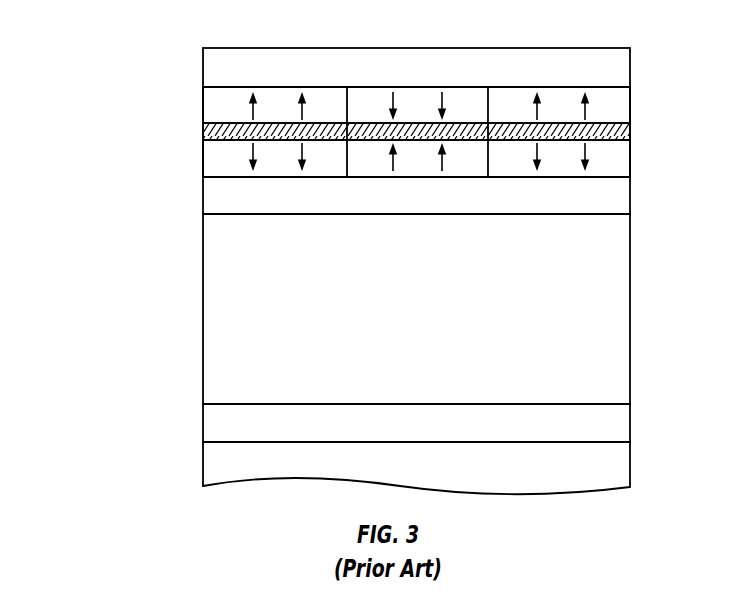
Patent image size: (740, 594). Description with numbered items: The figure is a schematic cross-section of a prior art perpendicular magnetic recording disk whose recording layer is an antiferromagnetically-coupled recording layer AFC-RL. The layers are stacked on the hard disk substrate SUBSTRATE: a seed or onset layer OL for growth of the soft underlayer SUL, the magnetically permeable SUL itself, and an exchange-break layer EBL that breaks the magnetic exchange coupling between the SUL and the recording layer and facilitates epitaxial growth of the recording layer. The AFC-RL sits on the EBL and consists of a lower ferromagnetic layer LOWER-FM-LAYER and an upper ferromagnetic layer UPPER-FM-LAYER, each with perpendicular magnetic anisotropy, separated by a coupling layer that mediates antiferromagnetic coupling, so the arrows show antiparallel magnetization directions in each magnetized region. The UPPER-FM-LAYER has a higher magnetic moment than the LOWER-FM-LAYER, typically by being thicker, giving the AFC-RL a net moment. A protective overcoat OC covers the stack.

The protective overcoat OC is at (416, 67).
The antiferromagnetically-coupled recording layer AFC-RL is at (648, 87).
The upper ferromagnetic layer UPPER-FM-LAYER is at (203, 98).
The lower ferromagnetic layer LOWER-FM-LAYER is at (203, 160).
The exchange-break layer EBL is at (416, 195).
The soft underlayer SUL is at (416, 309).
The onset layer OL is at (416, 423).
The hard disk substrate SUBSTRATE is at (416, 468).